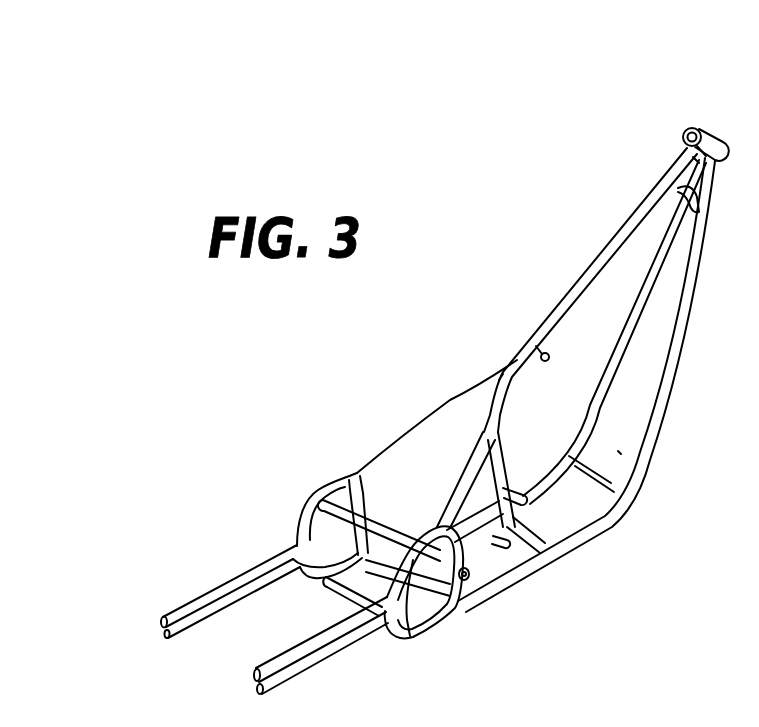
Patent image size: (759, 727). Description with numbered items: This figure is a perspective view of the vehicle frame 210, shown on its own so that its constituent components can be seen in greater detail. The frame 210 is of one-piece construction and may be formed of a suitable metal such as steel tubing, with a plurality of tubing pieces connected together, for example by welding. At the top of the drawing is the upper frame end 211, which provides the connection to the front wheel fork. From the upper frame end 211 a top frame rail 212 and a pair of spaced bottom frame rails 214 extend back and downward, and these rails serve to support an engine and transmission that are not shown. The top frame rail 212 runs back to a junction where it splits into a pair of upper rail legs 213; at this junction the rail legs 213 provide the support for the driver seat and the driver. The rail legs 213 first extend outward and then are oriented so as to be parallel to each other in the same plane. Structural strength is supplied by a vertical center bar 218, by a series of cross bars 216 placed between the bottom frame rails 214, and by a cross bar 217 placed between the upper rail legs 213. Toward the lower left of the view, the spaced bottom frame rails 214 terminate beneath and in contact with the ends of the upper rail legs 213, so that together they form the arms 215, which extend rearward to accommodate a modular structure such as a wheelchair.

The frame 210 is at (270, 397).
The upper frame end 211 is at (703, 128).
The top frame rail 212 is at (624, 241).
The upper rail legs 213 is at (300, 521).
The bottom frame rails 214 is at (620, 366).
The arms 215 is at (167, 632).
The cross bars 216 is at (612, 510).
The cross bar 217 is at (337, 523).
The vertical center bar 218 is at (502, 473).